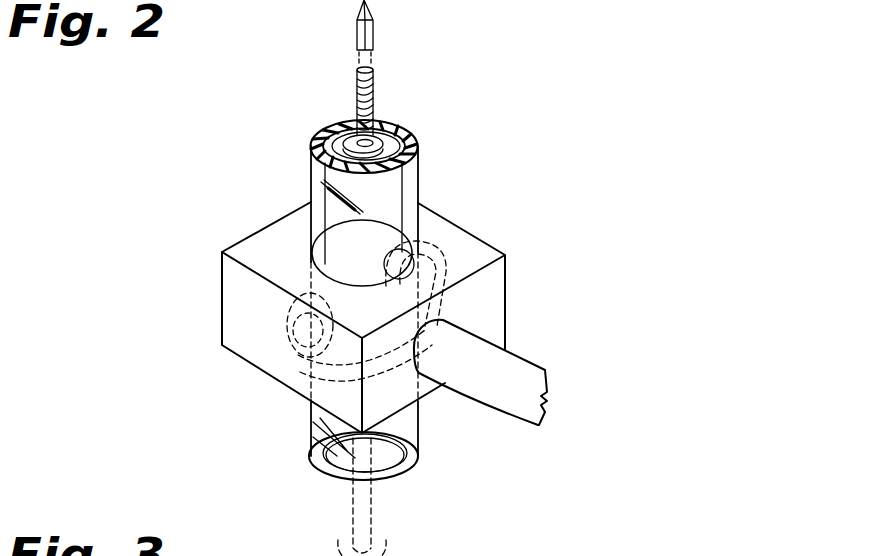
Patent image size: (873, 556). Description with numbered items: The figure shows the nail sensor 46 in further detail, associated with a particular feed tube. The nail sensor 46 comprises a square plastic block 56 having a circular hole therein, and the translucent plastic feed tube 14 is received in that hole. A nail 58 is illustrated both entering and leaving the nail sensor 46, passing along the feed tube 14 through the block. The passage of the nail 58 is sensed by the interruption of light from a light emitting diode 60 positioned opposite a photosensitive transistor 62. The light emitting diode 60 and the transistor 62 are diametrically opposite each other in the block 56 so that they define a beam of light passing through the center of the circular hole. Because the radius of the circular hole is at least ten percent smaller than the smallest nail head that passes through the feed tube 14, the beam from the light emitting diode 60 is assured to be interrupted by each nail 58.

The feed tube 14 is at (418, 173).
The nail sensor 46 is at (198, 437).
The square plastic block 56 is at (243, 330).
The nail 58 is at (373, 42).
The light emitting diode 60 is at (293, 288).
The photosensitive transistor 62 is at (410, 243).